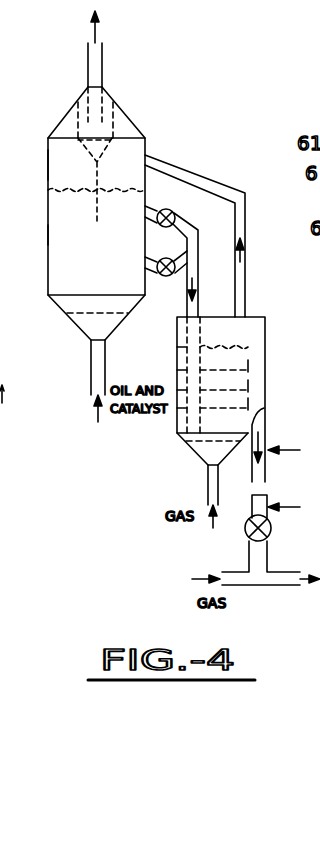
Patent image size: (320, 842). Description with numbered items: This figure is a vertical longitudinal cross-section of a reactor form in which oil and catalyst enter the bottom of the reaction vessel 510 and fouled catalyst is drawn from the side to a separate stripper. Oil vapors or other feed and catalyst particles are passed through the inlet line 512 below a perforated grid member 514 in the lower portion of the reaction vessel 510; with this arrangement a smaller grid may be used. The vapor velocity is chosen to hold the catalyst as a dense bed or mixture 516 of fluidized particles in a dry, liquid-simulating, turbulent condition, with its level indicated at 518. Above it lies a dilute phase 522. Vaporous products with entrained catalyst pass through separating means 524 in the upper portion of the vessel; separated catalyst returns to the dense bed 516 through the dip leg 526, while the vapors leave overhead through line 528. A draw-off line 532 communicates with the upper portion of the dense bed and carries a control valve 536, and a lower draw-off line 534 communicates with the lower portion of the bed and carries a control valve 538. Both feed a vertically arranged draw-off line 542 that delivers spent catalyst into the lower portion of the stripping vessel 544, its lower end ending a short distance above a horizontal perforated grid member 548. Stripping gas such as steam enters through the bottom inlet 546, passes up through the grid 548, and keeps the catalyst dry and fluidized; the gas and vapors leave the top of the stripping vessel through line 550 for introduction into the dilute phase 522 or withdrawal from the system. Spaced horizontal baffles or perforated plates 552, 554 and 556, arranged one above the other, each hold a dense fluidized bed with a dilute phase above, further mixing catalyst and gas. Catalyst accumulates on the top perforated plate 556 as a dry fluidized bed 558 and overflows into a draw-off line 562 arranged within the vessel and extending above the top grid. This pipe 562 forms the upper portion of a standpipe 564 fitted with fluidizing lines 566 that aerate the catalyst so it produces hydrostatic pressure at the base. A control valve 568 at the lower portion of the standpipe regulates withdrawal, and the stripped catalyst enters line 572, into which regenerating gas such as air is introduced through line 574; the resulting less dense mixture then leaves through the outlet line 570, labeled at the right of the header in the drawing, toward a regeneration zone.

The reaction vessel 510 is at (147, 136).
The inlet line 512 is at (91, 374).
The perforated grid member 514 is at (82, 331).
The dense bed or mixture 516 is at (48, 233).
The level of dense fluidized mixture 518 is at (48, 193).
The dilute phase 522 is at (48, 158).
The separating means 524 is at (72, 116).
The dip leg 526 is at (100, 171).
The overhead line 528 is at (103, 62).
The draw-off line 532 is at (151, 209).
The draw-off line 534 is at (151, 272).
The control valve 536 is at (176, 215).
The control valve 538 is at (192, 251).
The vertically arranged draw-off line 542 is at (199, 300).
The stripping vessel 544 is at (266, 331).
The bottom inlet 546 is at (208, 484).
The perforated grid member 548 is at (196, 441).
The line 550 is at (247, 230).
The horizontal baffle or perforated plate 552 is at (250, 412).
The horizontal baffle or perforated plate 554 is at (250, 392).
The top perforated plate 556 is at (250, 372).
The dry fluidized bed or mixture 558 is at (177, 350).
The draw-off line 562 is at (270, 345).
The standpipe 564 is at (270, 434).
The fluidizing lines 566 is at (298, 452).
The control valve 568 is at (272, 529).
The outlet conduit 570 is at (294, 587).
The line 572 is at (266, 585).
The line 574 is at (243, 572).